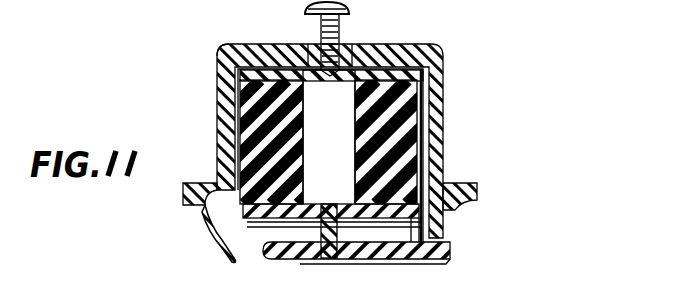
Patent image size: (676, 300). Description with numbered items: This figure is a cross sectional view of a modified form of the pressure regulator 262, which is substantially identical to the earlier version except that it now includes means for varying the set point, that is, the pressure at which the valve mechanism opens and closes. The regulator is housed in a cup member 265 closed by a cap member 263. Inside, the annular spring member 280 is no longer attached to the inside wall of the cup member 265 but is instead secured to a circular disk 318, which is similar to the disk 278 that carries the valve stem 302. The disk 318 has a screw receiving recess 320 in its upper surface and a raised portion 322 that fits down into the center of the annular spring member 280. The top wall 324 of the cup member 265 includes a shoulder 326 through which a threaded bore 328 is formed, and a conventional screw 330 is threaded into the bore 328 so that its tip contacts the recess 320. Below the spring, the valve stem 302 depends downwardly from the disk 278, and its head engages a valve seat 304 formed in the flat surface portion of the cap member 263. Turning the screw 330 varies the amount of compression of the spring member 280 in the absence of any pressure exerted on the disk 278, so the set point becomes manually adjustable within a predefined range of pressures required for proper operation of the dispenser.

The pressure regulator 262 is at (172, 82).
The cap member 263 is at (452, 260).
The cup member 265 is at (444, 102).
The disk 278 is at (262, 227).
The spring member 280 is at (408, 146).
The valve stem 302 is at (443, 235).
The valve seat 304 is at (356, 259).
The circular disk 318 is at (444, 64).
The screw receiving recess 320 is at (388, 56).
The raised portion 322 is at (333, 88).
The top wall 324 is at (233, 48).
The shoulder 326 is at (316, 44).
The threaded bore 328 is at (340, 27).
The screw 330 is at (348, 9).